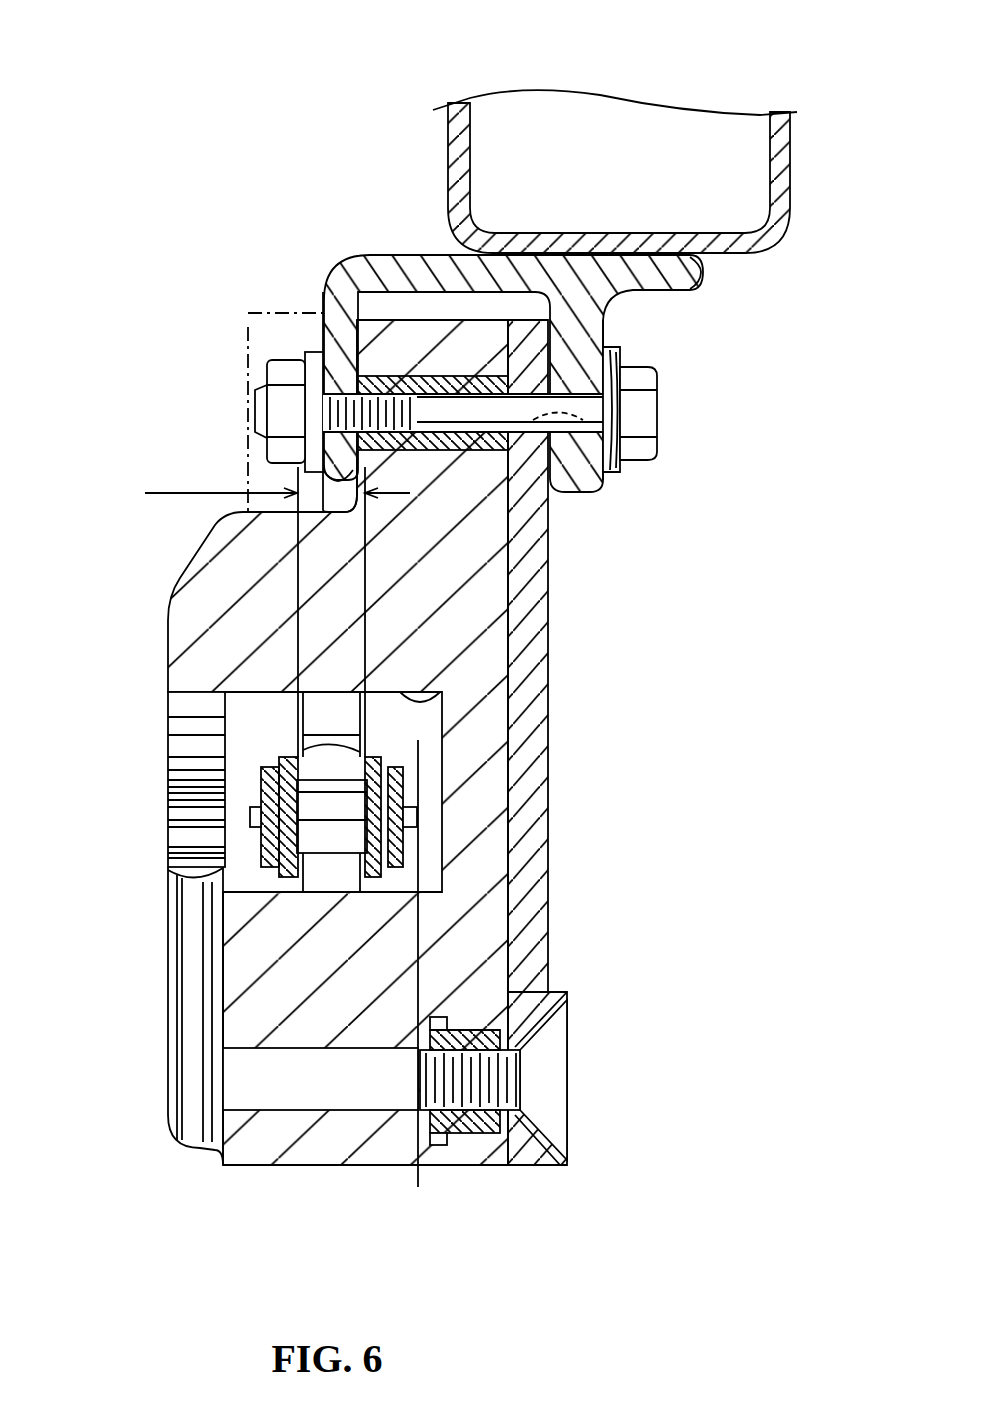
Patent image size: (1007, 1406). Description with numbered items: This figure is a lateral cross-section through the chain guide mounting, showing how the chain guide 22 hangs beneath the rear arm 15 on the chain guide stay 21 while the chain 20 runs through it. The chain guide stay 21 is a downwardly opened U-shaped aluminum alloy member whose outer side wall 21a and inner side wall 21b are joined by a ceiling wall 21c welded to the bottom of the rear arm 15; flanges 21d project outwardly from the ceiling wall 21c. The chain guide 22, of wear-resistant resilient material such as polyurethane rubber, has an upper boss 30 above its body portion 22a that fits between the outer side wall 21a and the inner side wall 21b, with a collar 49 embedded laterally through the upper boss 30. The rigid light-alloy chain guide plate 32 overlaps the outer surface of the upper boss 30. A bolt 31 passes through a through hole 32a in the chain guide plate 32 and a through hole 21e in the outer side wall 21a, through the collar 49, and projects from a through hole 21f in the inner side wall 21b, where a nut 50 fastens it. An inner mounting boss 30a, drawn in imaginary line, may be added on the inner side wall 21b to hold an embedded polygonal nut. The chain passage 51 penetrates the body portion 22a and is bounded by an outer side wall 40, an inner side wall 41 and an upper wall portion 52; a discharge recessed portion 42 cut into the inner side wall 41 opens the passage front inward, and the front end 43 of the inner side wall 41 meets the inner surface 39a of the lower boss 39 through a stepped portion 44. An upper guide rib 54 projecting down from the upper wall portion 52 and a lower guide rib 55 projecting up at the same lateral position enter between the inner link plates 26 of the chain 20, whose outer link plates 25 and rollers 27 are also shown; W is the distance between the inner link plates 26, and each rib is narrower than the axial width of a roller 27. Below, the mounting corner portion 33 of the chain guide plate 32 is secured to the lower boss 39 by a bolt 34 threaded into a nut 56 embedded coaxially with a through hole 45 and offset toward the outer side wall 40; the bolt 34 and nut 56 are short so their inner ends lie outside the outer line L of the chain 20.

The rear arm 15 is at (620, 108).
The chain 20 is at (420, 797).
The chain guide stay 21 is at (392, 250).
The outer side wall 21a is at (593, 327).
The inner side wall 21b is at (323, 328).
The ceiling wall 21c is at (445, 262).
The flanges 21d is at (710, 272).
The through hole 21e is at (577, 403).
The through hole 21f is at (305, 375).
The chain guide 22 is at (340, 140).
The body portion 22a is at (450, 583).
The outer link plates 25 is at (272, 757).
The inner link plates 26 is at (300, 690).
The rollers 27 is at (403, 842).
The upper boss 30 is at (392, 333).
The inner mounting boss 30a is at (283, 313).
The bolt 31 is at (648, 425).
The chain guide plate 32 is at (545, 547).
The through hole 32a is at (622, 465).
The mounting corner portion 33 is at (520, 1160).
The bolt 34 is at (553, 1085).
The lower boss 39 is at (312, 1153).
The inner surface 39a is at (225, 1000).
The outer side wall 40 is at (508, 832).
The inner side wall 41 is at (185, 800).
The discharge recessed portion 42 is at (180, 840).
The front end 43 is at (182, 766).
The stepped portion 44 is at (178, 940).
The through hole 45 is at (235, 1073).
The collar 49 is at (440, 375).
The nut 50 is at (262, 412).
The chain passage 51 is at (428, 775).
The upper wall portion 52 is at (400, 760).
The upper guide rib 54 is at (345, 705).
The lower guide rib 55 is at (327, 870).
The nut 56 is at (470, 1003).
The distance between inner link plates W is at (263, 612).
The outer line of the chain L is at (520, 935).